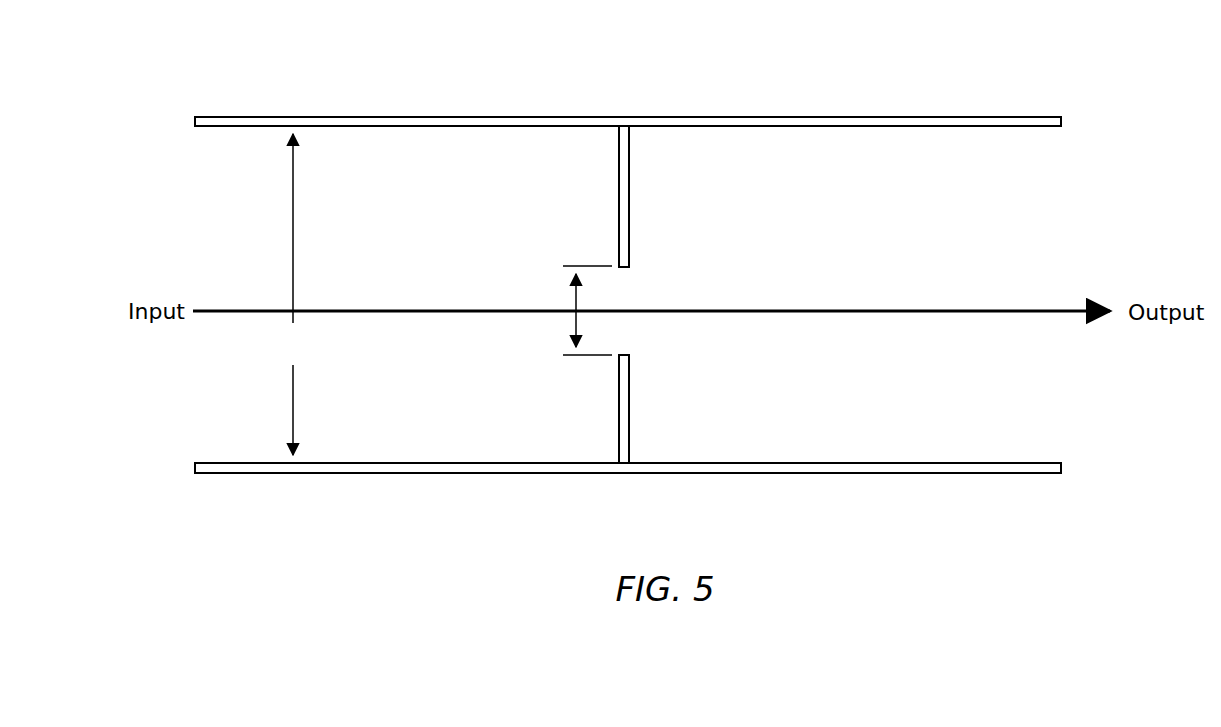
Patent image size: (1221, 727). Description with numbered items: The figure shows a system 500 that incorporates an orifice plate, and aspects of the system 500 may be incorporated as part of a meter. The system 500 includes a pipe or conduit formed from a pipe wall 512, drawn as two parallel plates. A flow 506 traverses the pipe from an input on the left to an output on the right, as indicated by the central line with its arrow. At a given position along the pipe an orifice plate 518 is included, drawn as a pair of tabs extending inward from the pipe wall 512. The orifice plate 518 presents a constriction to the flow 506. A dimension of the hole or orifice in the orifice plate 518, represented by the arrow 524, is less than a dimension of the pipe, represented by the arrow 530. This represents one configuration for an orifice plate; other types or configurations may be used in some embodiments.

The system 500 is at (1024, 90).
The pipe wall 512 is at (418, 121).
The orifice plate 518 is at (629, 188).
The flow 506 is at (480, 310).
The arrow 524 is at (575, 326).
The arrow 530 is at (293, 294).